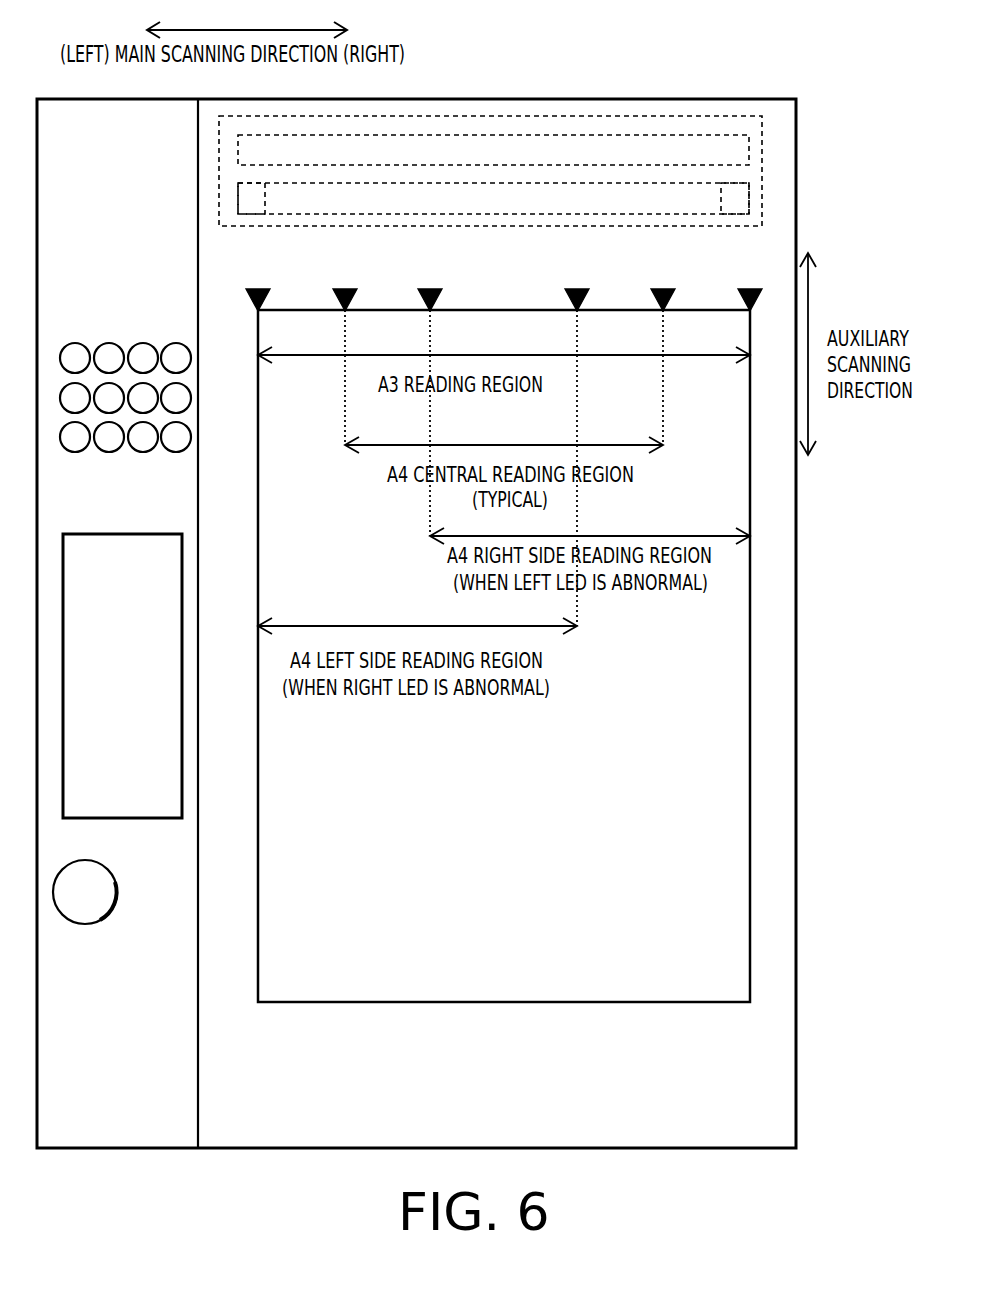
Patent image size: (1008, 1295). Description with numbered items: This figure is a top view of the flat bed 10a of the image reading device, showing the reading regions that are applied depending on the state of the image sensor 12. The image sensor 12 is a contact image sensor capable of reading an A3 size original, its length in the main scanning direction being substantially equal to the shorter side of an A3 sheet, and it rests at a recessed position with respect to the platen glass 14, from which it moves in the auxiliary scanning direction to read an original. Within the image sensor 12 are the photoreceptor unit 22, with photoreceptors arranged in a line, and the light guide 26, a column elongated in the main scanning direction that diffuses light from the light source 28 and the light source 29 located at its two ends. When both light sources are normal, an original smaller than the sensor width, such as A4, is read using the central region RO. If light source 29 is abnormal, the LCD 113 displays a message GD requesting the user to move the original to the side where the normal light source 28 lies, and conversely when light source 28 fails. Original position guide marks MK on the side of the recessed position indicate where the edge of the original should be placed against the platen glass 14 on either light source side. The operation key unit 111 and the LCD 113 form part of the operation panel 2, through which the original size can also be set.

The operation panel 2 is at (455, 621).
The flat bed 10a is at (800, 133).
The image sensor 12 is at (543, 116).
The photoreceptor unit 22 is at (631, 132).
The light guide 26 is at (286, 208).
The light source 28 is at (244, 202).
The light source 29 is at (740, 197).
The original position guide marks MK is at (244, 285).
The platen glass 14 is at (390, 1002).
The region RO is at (606, 438).
The operation key unit 111 is at (156, 458).
The LCD 113 is at (182, 666).
The message GD is at (168, 565).